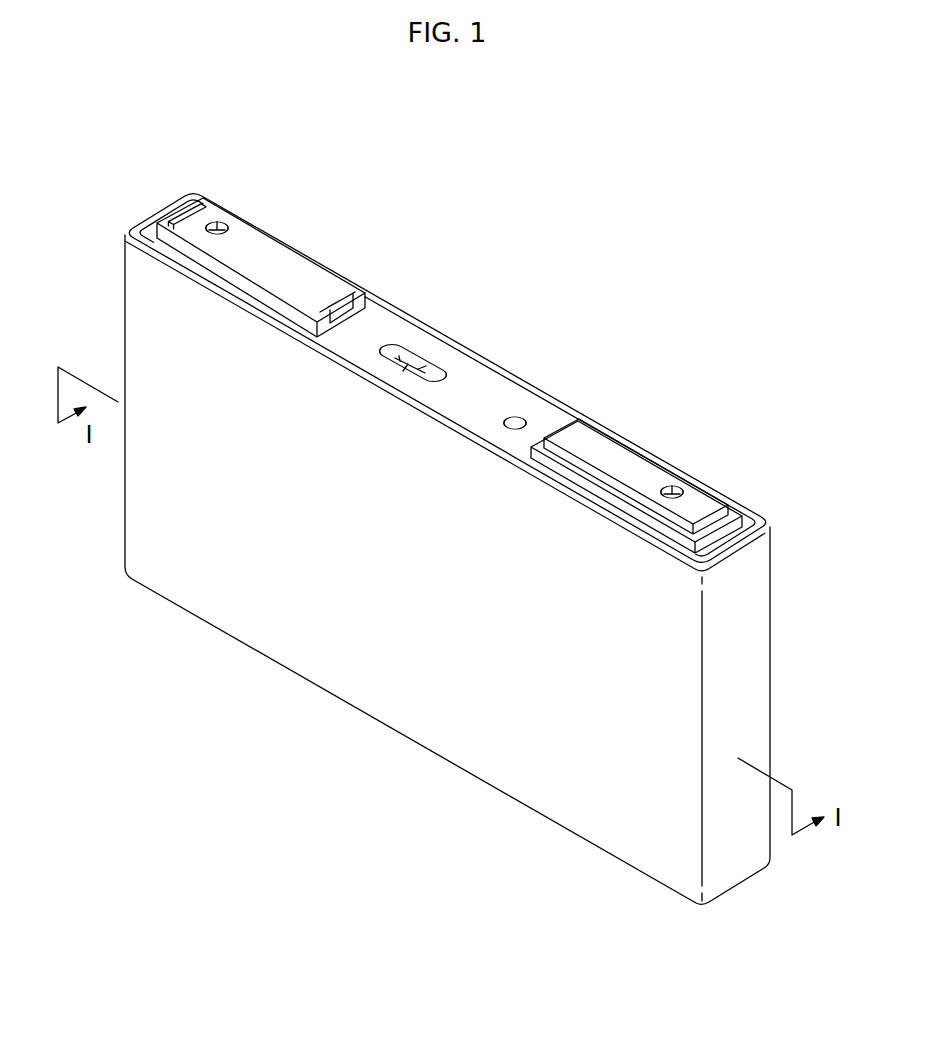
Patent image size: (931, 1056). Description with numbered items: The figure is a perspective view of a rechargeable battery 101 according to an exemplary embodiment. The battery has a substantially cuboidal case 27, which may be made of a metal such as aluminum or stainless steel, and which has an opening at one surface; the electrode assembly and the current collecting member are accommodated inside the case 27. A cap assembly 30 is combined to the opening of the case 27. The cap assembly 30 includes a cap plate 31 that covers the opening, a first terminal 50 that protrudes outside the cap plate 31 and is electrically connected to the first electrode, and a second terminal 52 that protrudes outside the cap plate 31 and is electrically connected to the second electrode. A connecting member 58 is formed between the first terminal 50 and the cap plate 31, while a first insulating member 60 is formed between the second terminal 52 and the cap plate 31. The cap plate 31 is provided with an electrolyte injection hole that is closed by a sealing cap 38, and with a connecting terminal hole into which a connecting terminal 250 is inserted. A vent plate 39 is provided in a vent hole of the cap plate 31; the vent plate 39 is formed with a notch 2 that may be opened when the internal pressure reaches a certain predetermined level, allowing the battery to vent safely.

The rechargeable battery 101 is at (479, 144).
The case 27 is at (355, 665).
The cap assembly 30 is at (447, 378).
The cap plate 31 is at (380, 326).
The vent plate 39 is at (430, 328).
The notch 2 is at (427, 367).
The sealing cap 38 is at (520, 417).
The second terminal 52 is at (261, 254).
The first insulating member 60 is at (323, 264).
The first terminal 50 is at (615, 453).
The connecting member 58 is at (720, 537).
The connecting terminal 250 is at (218, 222).